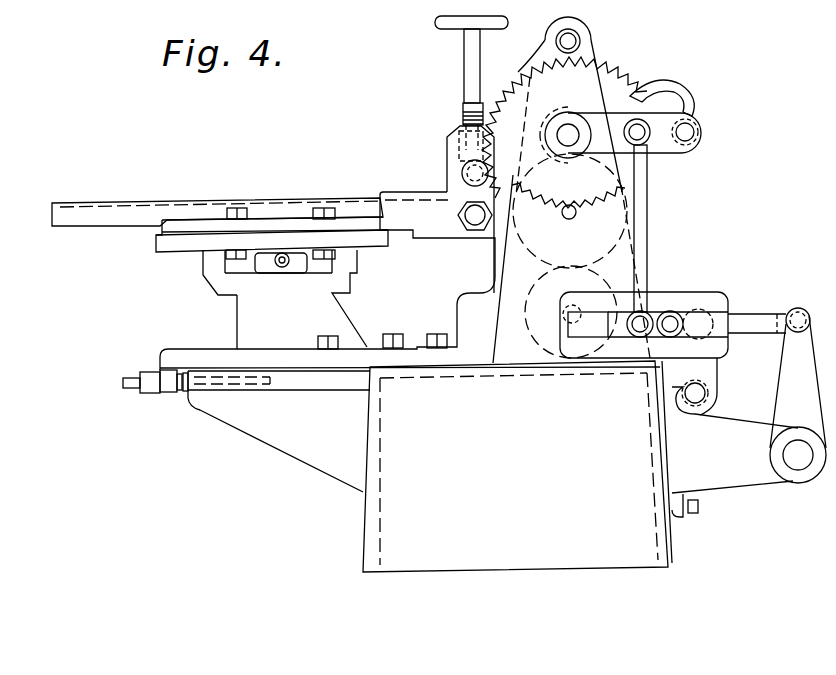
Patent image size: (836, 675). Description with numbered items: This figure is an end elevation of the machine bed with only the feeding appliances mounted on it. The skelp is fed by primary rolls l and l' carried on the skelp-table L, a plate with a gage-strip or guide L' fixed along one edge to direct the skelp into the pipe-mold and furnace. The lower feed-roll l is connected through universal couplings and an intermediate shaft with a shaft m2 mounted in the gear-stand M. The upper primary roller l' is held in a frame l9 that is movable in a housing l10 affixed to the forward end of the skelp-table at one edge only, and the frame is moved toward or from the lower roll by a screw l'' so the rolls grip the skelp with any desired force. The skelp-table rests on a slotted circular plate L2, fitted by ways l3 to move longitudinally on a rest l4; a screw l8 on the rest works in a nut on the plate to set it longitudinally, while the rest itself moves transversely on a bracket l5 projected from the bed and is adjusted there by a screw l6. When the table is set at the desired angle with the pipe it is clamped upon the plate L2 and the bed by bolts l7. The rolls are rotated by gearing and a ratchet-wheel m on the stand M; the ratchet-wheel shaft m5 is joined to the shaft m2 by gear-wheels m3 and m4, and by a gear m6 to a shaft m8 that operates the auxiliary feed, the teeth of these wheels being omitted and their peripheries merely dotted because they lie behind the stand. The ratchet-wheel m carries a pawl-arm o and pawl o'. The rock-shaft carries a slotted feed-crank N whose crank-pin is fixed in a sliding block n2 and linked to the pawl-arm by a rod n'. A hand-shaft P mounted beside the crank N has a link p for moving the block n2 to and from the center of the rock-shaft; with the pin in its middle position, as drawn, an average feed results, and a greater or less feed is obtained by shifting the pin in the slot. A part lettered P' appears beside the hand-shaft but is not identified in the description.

The skelp-table L is at (229, 215).
The gage-strip or guide L' is at (234, 197).
The slotted circular plate L2 is at (156, 243).
The lower feed-roll l is at (436, 211).
The upper primary roller l' is at (471, 143).
The screw l'' is at (464, 70).
The ways l3 is at (214, 276).
The rest l4 is at (246, 300).
The bracket l5 is at (279, 431).
The screw l6 is at (184, 394).
The bolts l7 is at (240, 208).
The screw l8 is at (284, 268).
The frame l9 is at (461, 173).
The housing l10 is at (447, 143).
The stand M is at (628, 35).
The ratchet-wheel m is at (614, 82).
The shaft m2 is at (581, 208).
The gear-wheel m3 is at (524, 246).
The gear-wheel m4 is at (567, 113).
The shaft of the ratchet-wheel m5 is at (557, 135).
The gear m6 is at (538, 293).
The shaft m8 is at (563, 312).
The slotted feed-crank N is at (688, 292).
The rod n' is at (659, 228).
The sliding block n2 is at (617, 325).
The pawl-arm o is at (634, 143).
The pawl o' is at (662, 90).
The link p is at (765, 316).
The hand-shaft P is at (798, 411).
The bracket arm P' is at (730, 460).